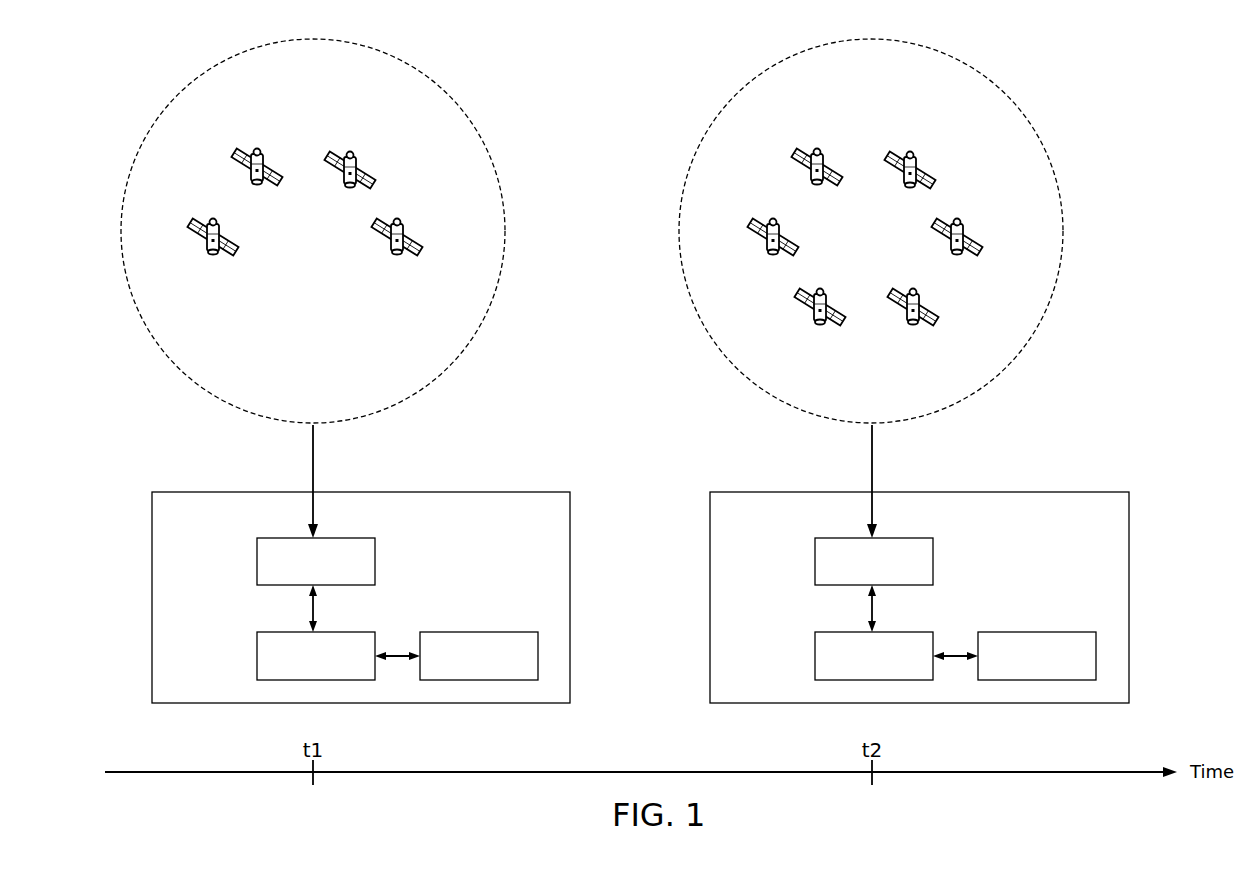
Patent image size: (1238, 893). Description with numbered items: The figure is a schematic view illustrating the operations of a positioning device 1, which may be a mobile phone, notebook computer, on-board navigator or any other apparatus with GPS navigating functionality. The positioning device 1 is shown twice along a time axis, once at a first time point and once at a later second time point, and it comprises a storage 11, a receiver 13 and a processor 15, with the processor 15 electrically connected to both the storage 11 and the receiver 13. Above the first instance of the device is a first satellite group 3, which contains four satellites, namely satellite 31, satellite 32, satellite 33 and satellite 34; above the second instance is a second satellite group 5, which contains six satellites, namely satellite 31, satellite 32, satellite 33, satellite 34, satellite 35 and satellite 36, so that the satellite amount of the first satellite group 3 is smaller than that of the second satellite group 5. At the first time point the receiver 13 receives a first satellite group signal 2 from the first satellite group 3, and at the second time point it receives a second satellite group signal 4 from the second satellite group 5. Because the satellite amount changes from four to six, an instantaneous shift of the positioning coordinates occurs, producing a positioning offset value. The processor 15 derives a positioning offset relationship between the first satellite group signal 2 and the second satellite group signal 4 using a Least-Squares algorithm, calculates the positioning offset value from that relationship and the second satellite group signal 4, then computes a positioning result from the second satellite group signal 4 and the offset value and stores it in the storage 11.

The positioning device 1 is at (173, 488).
The first satellite group signal 2 is at (301, 473).
The first satellite group 3 is at (455, 98).
The second satellite group signal 4 is at (860, 473).
The second satellite group 5 is at (1015, 98).
The storage 11 is at (473, 632).
The receiver 13 is at (375, 562).
The processor 15 is at (356, 632).
The satellite 31 is at (247, 185).
The satellite 32 is at (377, 188).
The satellite 33 is at (206, 255).
The satellite 34 is at (425, 255).
The satellite 35 is at (812, 325).
The satellite 36 is at (940, 325).